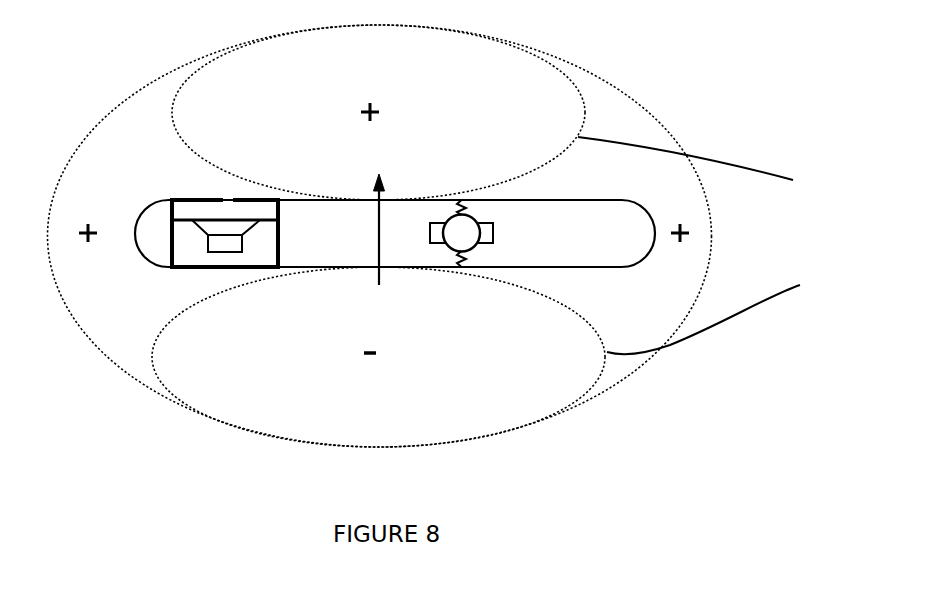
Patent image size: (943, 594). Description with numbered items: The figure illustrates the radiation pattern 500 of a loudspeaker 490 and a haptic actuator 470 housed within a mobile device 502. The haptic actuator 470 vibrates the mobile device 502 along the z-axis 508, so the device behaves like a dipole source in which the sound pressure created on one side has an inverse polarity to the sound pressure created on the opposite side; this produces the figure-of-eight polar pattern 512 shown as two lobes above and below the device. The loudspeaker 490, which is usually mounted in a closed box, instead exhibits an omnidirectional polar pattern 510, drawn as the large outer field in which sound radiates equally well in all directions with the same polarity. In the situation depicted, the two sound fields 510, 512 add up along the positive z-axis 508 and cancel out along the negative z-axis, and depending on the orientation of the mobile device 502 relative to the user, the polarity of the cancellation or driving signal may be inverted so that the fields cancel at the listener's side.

The radiation pattern 500 is at (400, 488).
The mobile device 502 is at (577, 200).
The z-axis 508 is at (375, 228).
The omnidirectional polar pattern 510 is at (130, 99).
The figure-of-eight polar pattern 512 is at (700, 245).
The haptic actuator 470 is at (495, 223).
The loudspeaker 490 is at (168, 255).